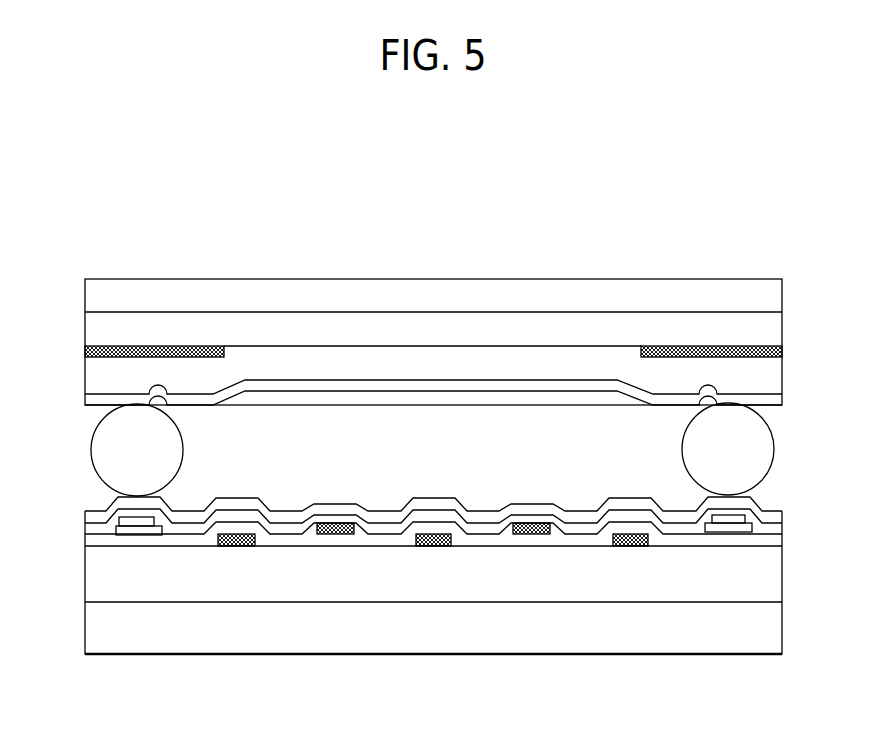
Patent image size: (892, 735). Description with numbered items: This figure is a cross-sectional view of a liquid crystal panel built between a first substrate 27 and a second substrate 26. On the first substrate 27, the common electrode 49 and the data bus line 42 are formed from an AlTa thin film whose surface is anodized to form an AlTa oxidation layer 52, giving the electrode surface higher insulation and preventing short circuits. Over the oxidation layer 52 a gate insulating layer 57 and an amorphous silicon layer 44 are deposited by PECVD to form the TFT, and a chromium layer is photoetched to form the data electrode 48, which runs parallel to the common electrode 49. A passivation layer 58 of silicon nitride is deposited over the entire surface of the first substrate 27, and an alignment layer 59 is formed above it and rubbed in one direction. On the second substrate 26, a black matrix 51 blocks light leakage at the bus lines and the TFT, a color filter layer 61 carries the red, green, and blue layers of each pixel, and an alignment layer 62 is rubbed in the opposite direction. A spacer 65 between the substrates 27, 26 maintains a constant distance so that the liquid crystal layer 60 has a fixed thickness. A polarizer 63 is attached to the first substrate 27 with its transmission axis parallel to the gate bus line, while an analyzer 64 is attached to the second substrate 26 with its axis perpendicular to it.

The analyzer 64 is at (772, 297).
The second substrate 26 is at (772, 332).
The black matrix 51 is at (85, 351).
The color filter layer 61 is at (772, 372).
The alignment layer 62 is at (766, 402).
The spacer 65 is at (100, 447).
The alignment layer 59 is at (776, 508).
The passivation layer 58 is at (772, 528).
The gate insulating layer 57 is at (95, 540).
The data bus line 42 is at (123, 518).
The amorphous silicon layer 44 is at (137, 535).
The common electrode 49 is at (232, 547).
The AlTa oxidation layer 52 is at (254, 547).
The data electrode 48 is at (532, 535).
The liquid crystal layer 60 is at (382, 483).
The first substrate 27 is at (772, 575).
The polarizer 63 is at (772, 628).